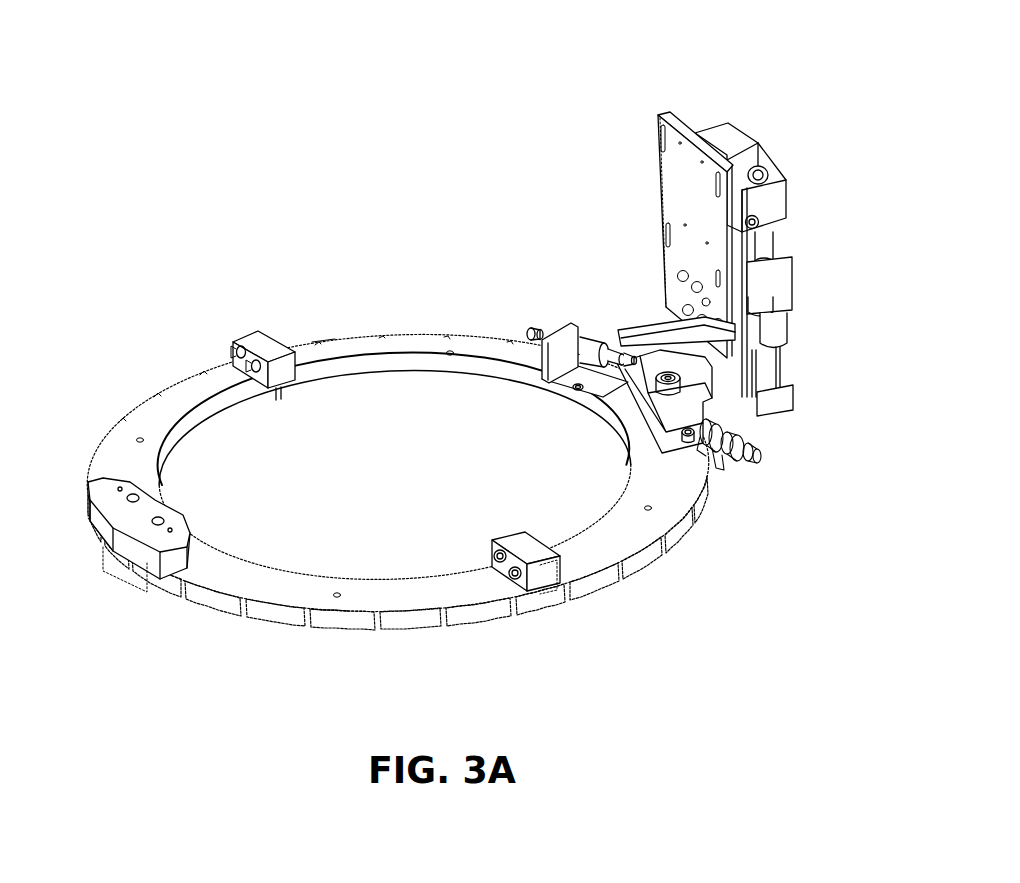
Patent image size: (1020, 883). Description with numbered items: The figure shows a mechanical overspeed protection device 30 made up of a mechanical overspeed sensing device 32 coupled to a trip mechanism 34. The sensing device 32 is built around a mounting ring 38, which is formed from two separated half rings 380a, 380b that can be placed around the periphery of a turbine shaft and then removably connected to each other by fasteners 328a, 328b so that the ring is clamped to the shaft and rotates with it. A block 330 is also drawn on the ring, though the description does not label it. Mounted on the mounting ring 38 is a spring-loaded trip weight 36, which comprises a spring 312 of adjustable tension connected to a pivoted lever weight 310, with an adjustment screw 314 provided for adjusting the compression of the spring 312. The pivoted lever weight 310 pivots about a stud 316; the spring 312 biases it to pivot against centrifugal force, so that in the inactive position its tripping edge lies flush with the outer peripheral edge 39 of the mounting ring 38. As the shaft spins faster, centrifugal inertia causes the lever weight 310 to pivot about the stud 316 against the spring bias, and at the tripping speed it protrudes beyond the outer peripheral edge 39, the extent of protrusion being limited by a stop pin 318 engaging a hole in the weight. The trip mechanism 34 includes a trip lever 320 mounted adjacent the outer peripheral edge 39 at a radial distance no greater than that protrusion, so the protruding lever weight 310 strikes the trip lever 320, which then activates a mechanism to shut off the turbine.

The mechanical overspeed protection device 30 is at (168, 33).
The mechanical overspeed sensing device 32 is at (72, 317).
The trip mechanism 34 is at (795, 96).
The spring-loaded trip weight 36 is at (523, 353).
The mounting ring 38 is at (378, 337).
The outer peripheral edge 39 is at (638, 556).
The pivoted lever weight 310 is at (690, 450).
The spring 312 is at (601, 343).
The adjustment screw 314 is at (533, 330).
The stud 316 is at (668, 372).
The stop pin 318 is at (688, 428).
The trip lever 320 is at (657, 323).
The fastener 328a is at (507, 537).
The fastener 328b is at (247, 338).
The mounting tab 330 is at (170, 507).
The half ring 380a is at (278, 626).
The half ring 380b is at (333, 340).